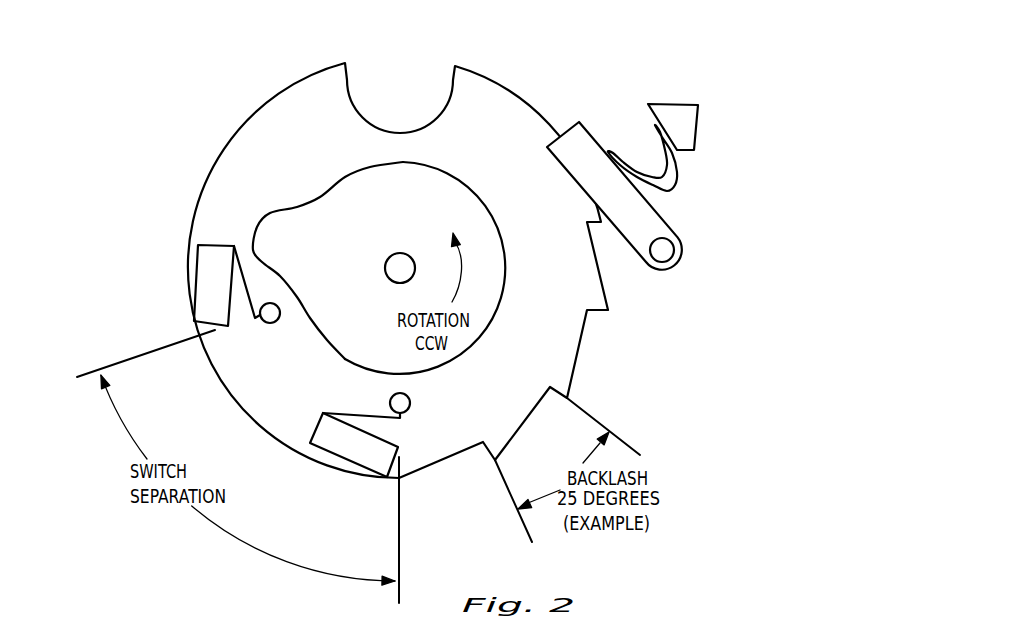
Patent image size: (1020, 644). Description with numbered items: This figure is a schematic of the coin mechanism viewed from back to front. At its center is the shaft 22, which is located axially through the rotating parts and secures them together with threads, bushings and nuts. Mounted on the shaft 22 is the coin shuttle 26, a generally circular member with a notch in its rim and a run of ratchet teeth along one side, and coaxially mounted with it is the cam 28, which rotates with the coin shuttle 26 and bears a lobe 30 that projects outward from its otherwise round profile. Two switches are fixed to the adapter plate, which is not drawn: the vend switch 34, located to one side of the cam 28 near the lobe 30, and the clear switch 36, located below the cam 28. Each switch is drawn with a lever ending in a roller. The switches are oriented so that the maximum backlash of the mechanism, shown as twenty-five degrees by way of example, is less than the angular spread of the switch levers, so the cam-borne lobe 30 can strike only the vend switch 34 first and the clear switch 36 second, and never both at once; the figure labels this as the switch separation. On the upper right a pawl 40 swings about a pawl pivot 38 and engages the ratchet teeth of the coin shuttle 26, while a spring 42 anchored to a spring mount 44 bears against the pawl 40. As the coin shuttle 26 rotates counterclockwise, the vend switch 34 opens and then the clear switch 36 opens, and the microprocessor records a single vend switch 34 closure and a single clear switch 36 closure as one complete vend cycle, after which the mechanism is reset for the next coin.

The shaft 22 is at (386, 274).
The coin shuttle 26 is at (262, 103).
The cam 28 is at (274, 265).
The lobe 30 is at (293, 234).
The vend switch 34 is at (203, 271).
The clear switch 36 is at (357, 452).
The pawl pivot 38 is at (657, 253).
The pawl 40 is at (685, 250).
The spring 42 is at (682, 177).
The spring mount 44 is at (698, 127).